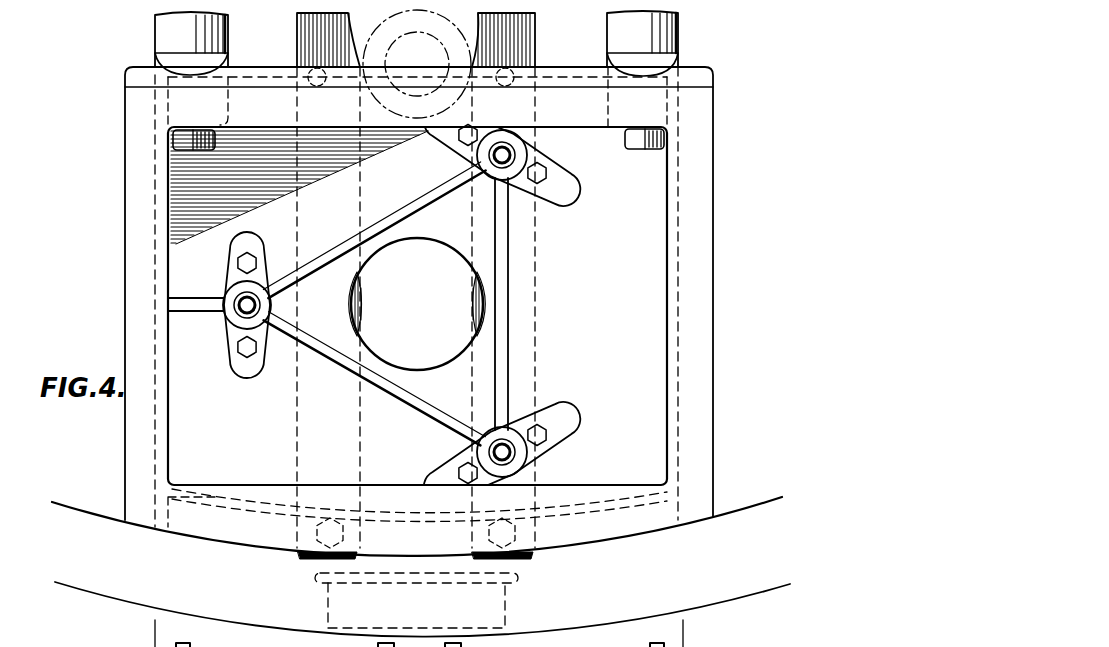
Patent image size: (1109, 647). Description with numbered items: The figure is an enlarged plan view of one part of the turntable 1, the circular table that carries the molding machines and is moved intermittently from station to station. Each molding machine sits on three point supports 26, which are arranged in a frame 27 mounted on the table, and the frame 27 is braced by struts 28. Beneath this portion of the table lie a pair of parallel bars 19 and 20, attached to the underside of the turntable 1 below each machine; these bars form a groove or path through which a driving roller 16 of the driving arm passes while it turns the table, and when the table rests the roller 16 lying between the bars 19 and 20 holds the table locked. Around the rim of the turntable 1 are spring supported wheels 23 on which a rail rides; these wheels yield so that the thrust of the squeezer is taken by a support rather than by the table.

The turntable 1 is at (735, 511).
The driving roller 16 is at (527, 29).
The parallel bar 19 is at (363, 291).
The parallel bar 20 is at (472, 291).
The spring supported wheel 23 is at (510, 603).
The three point support 26 is at (510, 307).
The frame 27 is at (713, 313).
The strut 28 is at (160, 31).